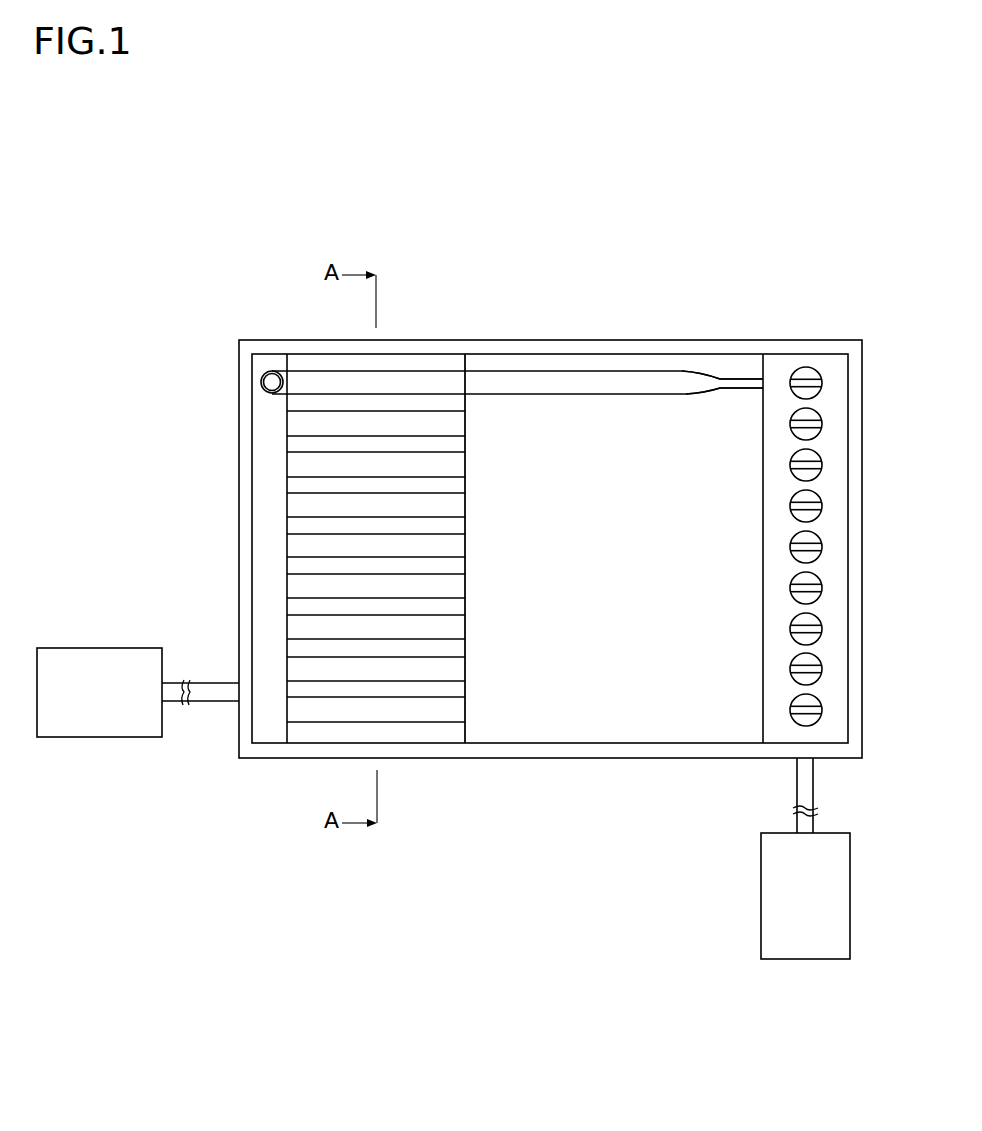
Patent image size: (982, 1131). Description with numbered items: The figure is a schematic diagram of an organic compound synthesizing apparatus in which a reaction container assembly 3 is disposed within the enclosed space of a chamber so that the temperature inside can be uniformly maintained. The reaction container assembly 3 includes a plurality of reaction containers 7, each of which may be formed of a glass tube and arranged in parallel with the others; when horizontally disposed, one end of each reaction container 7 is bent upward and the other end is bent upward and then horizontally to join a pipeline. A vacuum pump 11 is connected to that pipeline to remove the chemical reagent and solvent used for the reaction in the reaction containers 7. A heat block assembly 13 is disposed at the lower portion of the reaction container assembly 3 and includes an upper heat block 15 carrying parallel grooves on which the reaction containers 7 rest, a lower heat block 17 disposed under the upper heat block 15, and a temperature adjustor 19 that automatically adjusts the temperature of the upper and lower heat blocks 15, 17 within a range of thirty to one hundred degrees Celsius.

The reaction container assembly 3 is at (838, 343).
The reaction container 7 is at (538, 353).
The vacuum pump 11 is at (805, 960).
The heat block assembly 13 is at (608, 420).
The upper heat block 15 is at (292, 461).
The lower heat block 17 is at (684, 449).
The temperature adjustor 19 is at (99, 737).